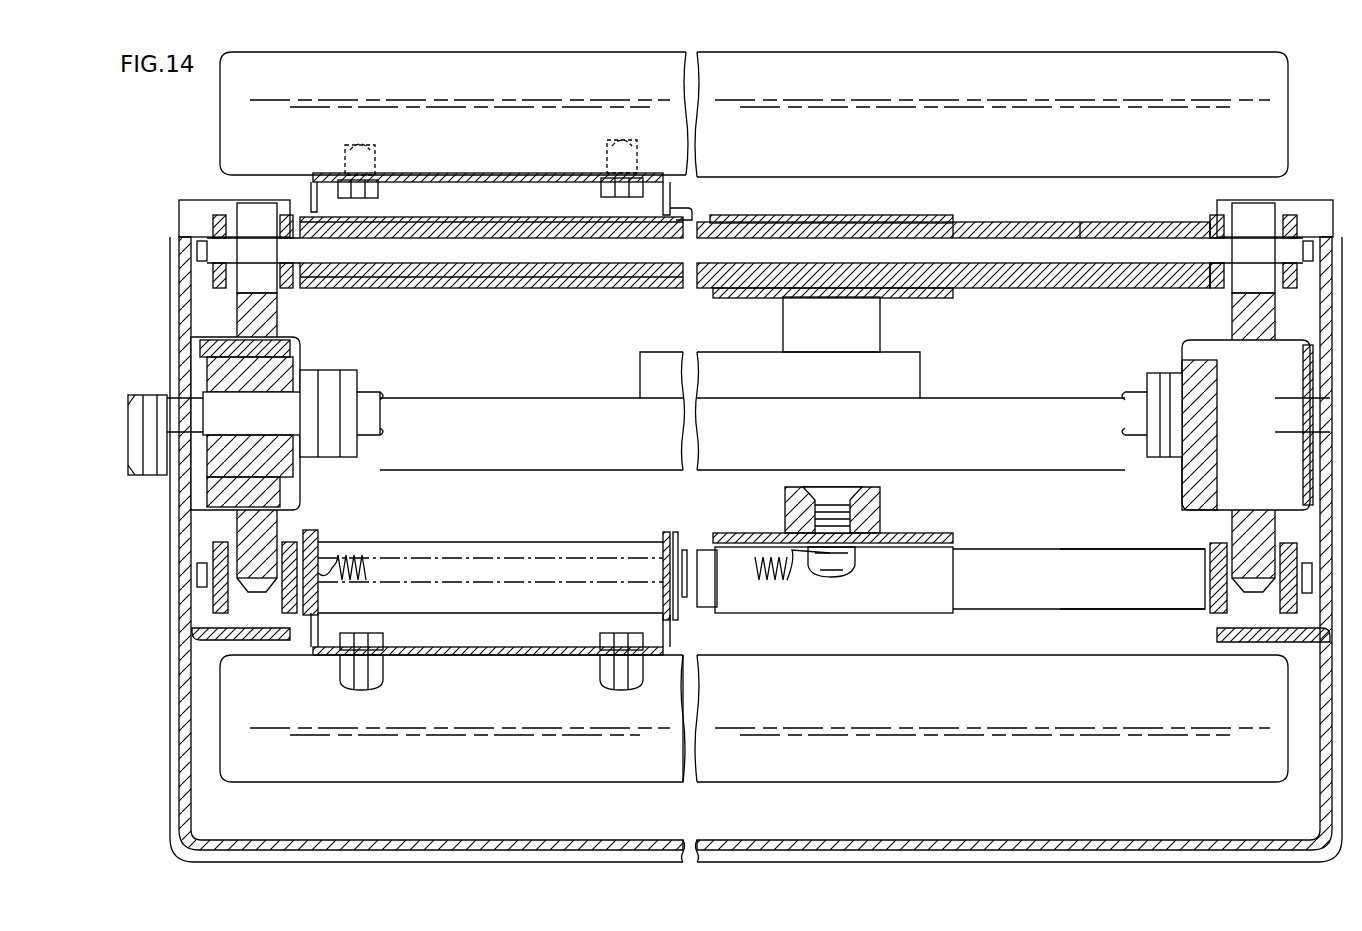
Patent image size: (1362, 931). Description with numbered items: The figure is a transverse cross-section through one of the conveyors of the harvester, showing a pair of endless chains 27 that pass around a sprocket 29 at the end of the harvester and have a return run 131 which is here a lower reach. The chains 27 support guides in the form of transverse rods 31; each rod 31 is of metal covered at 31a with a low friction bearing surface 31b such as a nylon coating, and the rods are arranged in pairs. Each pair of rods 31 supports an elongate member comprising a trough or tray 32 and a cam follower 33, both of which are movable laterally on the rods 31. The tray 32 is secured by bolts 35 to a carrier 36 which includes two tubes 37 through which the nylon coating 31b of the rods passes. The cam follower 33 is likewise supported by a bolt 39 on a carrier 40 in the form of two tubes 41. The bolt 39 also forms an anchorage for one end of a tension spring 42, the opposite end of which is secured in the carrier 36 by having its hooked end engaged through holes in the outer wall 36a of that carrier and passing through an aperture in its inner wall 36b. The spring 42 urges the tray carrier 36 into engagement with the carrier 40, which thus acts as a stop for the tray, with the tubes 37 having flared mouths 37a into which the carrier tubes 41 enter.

The endless chain 27 is at (225, 215).
The sprocket 29 is at (245, 533).
The transverse rod 31 is at (475, 252).
The covered portion of rod 31a is at (1015, 272).
The low friction bearing surface 31b is at (1120, 272).
The tray 32 is at (754, 440).
The cam follower 33 is at (875, 328).
The bolt 35 is at (378, 188).
The carrier 36 is at (457, 371).
The outer wall 36a is at (318, 540).
The inner wall 36b is at (660, 600).
The tube 37 is at (598, 290).
The flared mouth 37a is at (690, 215).
The bolt 39 is at (815, 520).
The carrier 40 is at (752, 290).
The tube 41 is at (828, 218).
The tension spring 42 is at (365, 560).
The return run 131 is at (793, 761).